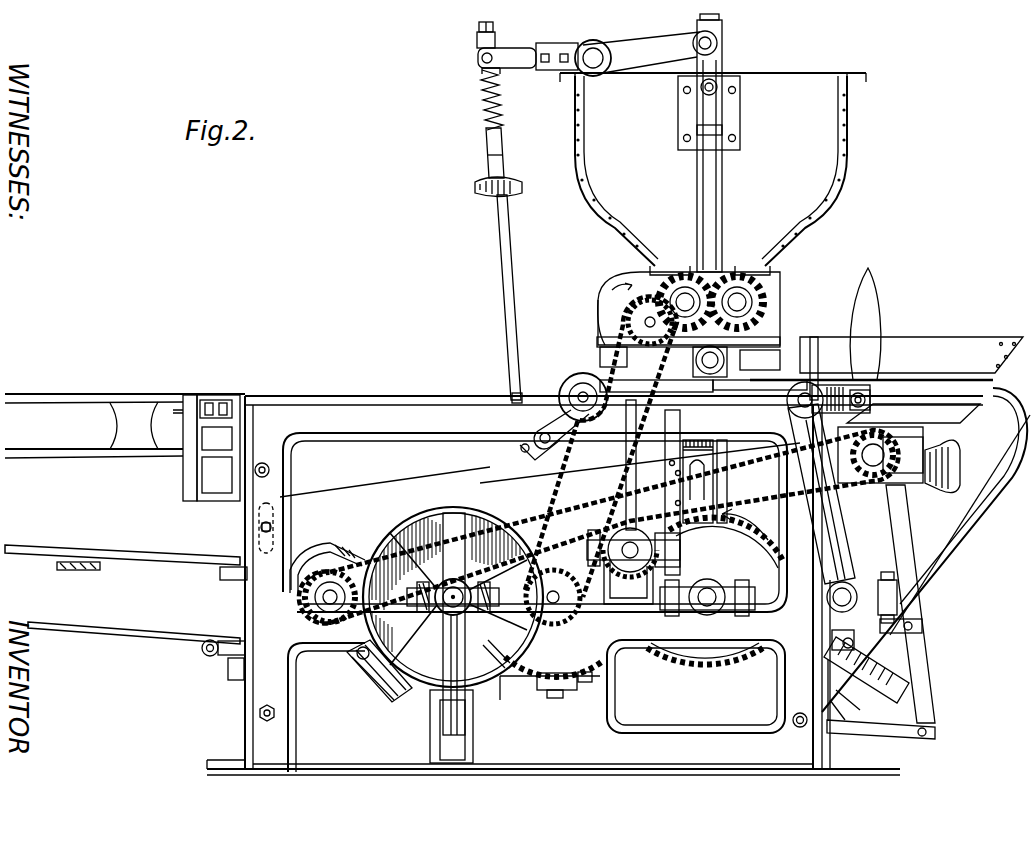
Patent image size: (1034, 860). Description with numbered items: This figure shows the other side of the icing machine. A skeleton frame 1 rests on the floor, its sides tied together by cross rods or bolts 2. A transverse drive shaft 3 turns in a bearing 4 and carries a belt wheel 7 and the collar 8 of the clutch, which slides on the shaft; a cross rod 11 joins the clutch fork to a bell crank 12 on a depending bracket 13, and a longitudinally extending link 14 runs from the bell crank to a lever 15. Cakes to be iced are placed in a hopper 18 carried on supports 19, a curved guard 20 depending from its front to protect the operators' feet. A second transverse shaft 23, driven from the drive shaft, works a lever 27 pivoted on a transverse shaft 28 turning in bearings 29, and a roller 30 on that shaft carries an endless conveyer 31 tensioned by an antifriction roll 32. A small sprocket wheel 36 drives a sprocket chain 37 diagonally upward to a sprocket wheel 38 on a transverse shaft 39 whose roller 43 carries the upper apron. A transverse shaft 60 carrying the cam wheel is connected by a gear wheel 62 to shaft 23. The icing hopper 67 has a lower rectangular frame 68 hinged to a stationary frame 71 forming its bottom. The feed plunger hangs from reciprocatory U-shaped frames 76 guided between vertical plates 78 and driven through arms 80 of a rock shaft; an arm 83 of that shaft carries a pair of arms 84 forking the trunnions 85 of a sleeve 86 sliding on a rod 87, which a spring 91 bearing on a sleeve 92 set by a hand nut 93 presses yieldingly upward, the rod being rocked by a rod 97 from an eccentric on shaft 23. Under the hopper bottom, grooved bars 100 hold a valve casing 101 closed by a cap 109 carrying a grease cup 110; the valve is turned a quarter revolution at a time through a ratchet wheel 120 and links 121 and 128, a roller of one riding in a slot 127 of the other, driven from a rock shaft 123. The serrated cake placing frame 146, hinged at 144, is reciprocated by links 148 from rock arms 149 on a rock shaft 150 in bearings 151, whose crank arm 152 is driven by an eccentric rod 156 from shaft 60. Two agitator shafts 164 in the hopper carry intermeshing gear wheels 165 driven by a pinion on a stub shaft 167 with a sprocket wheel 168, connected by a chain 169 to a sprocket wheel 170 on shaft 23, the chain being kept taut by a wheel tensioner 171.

The skeleton frame 1 is at (350, 396).
The cross rods or bolts 2 is at (270, 473).
The transverse shaft 3 is at (446, 612).
The bearing 4 is at (440, 700).
The belt wheel 7 is at (385, 670).
The collar 8 is at (487, 660).
The cross rod 11 is at (428, 440).
The bell crank 12 is at (520, 680).
The bracket or arm 13 is at (572, 690).
The longitudinally extending link 14 is at (935, 733).
The lever 15 is at (866, 270).
The hopper 18 is at (985, 337).
The supports 19 is at (917, 590).
The curved guard 20 is at (924, 550).
The transverse shaft 23 is at (555, 628).
The lever 27 is at (417, 622).
The transverse shaft 28 is at (322, 608).
The bearings 29 is at (336, 523).
The roller 30 is at (250, 582).
The endless conveyer or apron 31 is at (18, 547).
The antifriction roll 32 is at (245, 549).
The small sprocket wheel 36 is at (245, 614).
The sprocket chain 37 is at (212, 657).
The sprocket wheel 38 is at (870, 490).
The transverse shaft 39 is at (885, 465).
The roller 43 is at (887, 512).
The transverse shaft 60 is at (707, 616).
The gear wheel 62 is at (742, 662).
The hopper 67 is at (830, 73).
The rectangular frame 68 is at (612, 285).
The stationary frame 71 is at (735, 352).
The reciprocatory U-shaped frames 76 is at (722, 30).
The vertical plates 78 is at (680, 118).
The arms 80 is at (640, 42).
The outwardly projecting arm 83 is at (556, 43).
The pair of arms 84 is at (510, 48).
The trunnions 85 is at (483, 74).
The sleeve 86 is at (478, 46).
The rod 87 is at (505, 243).
The spring 91 is at (490, 102).
The sleeve 92 is at (488, 142).
The hand nut 93 is at (478, 192).
The rod 97 is at (446, 494).
The grooved bars 100 is at (785, 368).
The valve casing 101 is at (782, 330).
The cap 109 is at (644, 321).
The grease cup 110 is at (618, 465).
The ratchet wheel 120 is at (790, 336).
The link 121 is at (725, 480).
The rock shaft 123 is at (630, 565).
The slot 127 is at (640, 455).
The link 128 is at (672, 445).
The hinge 144 is at (760, 395).
The serrated cake placing frame 146 is at (713, 468).
The links 148 is at (850, 385).
The rock arms 149 is at (816, 350).
The rock shaft 150 is at (922, 633).
The bearings 151 is at (897, 600).
The crank arm 152 is at (843, 672).
The rod 156 is at (903, 691).
The shaft 164 is at (625, 272).
The intermeshing gear wheels 165 is at (680, 280).
The stub shaft 167 is at (598, 330).
The sprocket wheel 168 is at (600, 340).
The chain 169 is at (570, 452).
The sprocket wheel 170 is at (566, 612).
The wheel tensioner 171 is at (575, 390).